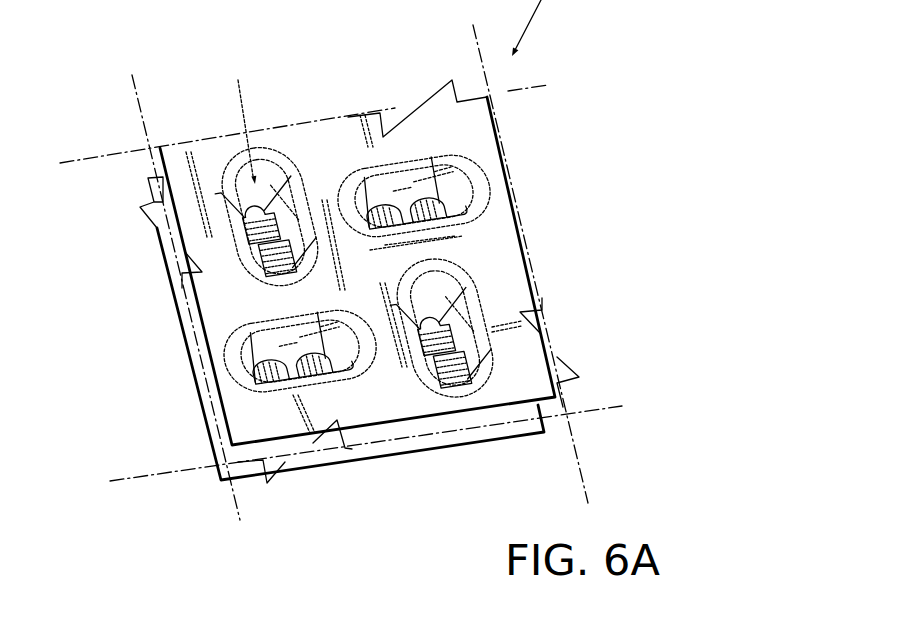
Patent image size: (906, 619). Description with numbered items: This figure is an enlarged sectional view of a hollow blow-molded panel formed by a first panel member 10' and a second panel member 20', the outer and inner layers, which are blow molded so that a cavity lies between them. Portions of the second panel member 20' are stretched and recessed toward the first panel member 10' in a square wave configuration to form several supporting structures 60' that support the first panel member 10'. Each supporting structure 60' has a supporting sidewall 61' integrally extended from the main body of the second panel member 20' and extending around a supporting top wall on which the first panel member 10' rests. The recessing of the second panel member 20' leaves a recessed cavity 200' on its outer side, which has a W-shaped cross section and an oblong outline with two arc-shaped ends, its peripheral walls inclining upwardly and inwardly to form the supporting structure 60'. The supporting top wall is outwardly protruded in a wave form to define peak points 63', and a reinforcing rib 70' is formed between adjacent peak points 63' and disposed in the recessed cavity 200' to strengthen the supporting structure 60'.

The first panel member 10' is at (342, 346).
The second panel member 20' is at (335, 262).
The supporting structure 60' is at (217, 216).
The supporting sidewall 61' is at (305, 182).
The peak points 63' is at (289, 168).
The reinforcing rib 70' is at (255, 191).
The recessed cavity 200' is at (224, 127).